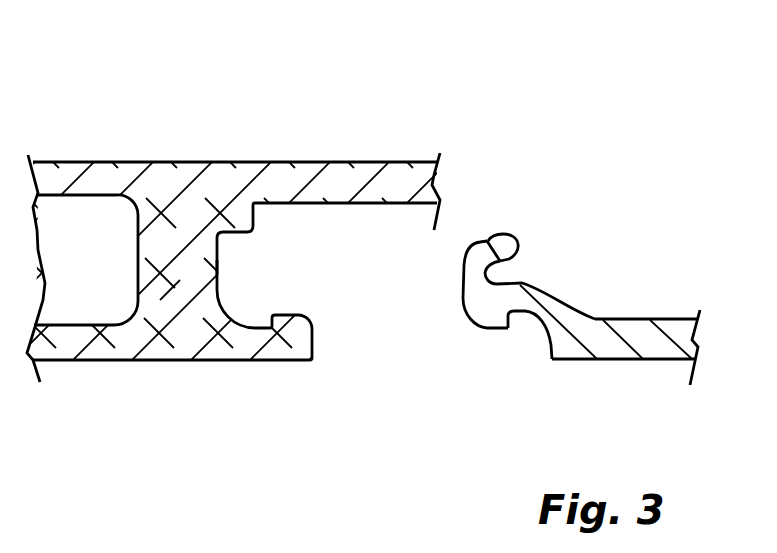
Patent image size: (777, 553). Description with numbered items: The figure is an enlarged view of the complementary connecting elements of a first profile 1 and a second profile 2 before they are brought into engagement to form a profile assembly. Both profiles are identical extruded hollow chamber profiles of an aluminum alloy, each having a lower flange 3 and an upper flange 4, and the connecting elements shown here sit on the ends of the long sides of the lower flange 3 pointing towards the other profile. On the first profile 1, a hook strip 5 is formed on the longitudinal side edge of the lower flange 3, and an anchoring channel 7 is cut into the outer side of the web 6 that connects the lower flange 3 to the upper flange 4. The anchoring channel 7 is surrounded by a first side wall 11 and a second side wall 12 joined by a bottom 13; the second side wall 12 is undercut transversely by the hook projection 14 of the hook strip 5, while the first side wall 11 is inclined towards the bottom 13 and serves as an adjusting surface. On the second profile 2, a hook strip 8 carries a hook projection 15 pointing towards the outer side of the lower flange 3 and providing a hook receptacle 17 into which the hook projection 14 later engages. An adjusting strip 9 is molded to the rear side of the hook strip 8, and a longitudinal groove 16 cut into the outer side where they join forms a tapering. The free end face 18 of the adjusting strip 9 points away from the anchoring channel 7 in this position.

The first profile 1 is at (205, 140).
The second profile 2 is at (653, 266).
The lower flange 3 is at (67, 365).
The upper flange 4 is at (100, 166).
The hook strip 5 is at (254, 365).
The web 6 is at (175, 283).
The anchoring channel 7 is at (229, 283).
The hook strip 8 is at (541, 280).
The adjusting strip 9 is at (489, 237).
The first side wall 11 is at (239, 236).
The second side wall 12 is at (256, 325).
The bottom 13 is at (222, 295).
The hook projection 14 is at (288, 316).
The hook projection 15 is at (486, 330).
The groove 16 is at (465, 279).
The hook receptacle 17 is at (527, 339).
The free end face 18 is at (518, 237).